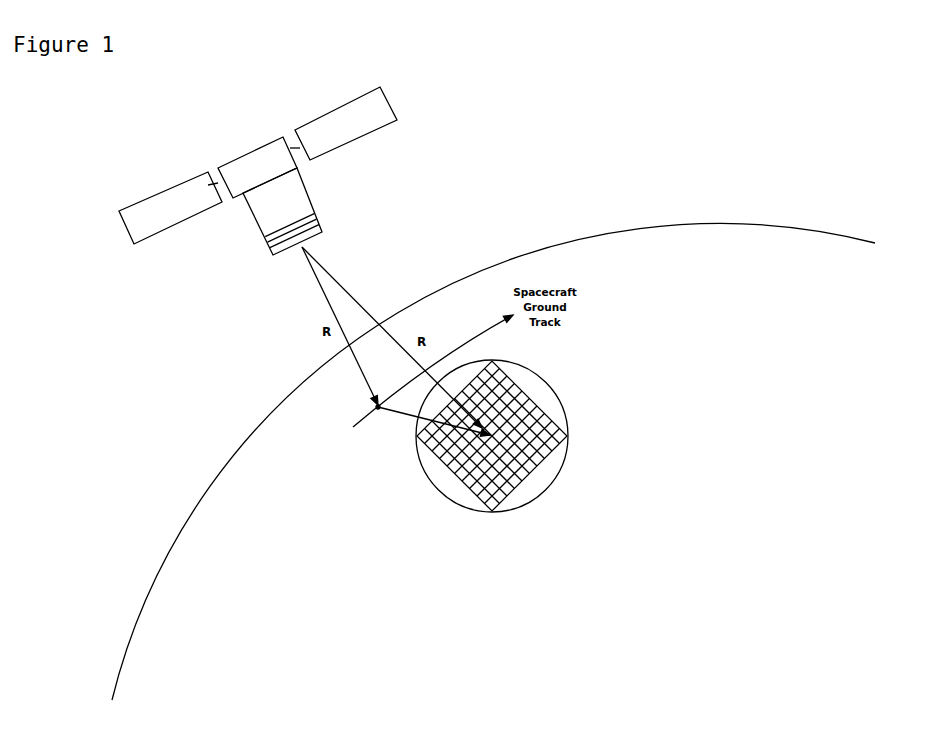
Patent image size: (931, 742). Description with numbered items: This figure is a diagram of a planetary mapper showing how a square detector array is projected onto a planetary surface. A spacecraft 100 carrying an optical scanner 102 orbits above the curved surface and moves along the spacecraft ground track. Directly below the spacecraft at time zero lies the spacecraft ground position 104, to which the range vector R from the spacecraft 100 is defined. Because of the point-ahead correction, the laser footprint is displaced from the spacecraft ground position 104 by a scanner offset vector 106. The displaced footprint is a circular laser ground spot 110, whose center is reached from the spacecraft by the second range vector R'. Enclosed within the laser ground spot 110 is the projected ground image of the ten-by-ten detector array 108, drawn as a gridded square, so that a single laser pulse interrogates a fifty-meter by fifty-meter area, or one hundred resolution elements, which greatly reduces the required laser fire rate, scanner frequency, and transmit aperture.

The spacecraft 100 is at (318, 172).
The optical scanner 102 is at (318, 227).
The spacecraft ground position 104 is at (373, 408).
The scanner offset vector 106 is at (400, 417).
The 10×10 detector array 108 is at (530, 436).
The laser ground spot 110 is at (543, 490).